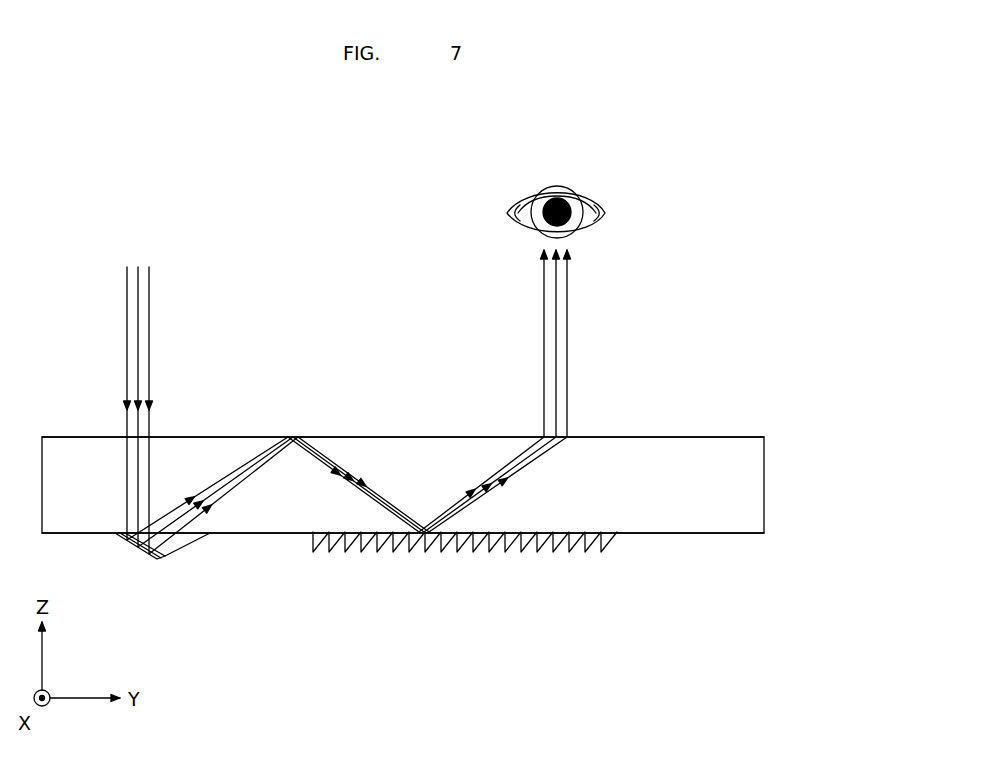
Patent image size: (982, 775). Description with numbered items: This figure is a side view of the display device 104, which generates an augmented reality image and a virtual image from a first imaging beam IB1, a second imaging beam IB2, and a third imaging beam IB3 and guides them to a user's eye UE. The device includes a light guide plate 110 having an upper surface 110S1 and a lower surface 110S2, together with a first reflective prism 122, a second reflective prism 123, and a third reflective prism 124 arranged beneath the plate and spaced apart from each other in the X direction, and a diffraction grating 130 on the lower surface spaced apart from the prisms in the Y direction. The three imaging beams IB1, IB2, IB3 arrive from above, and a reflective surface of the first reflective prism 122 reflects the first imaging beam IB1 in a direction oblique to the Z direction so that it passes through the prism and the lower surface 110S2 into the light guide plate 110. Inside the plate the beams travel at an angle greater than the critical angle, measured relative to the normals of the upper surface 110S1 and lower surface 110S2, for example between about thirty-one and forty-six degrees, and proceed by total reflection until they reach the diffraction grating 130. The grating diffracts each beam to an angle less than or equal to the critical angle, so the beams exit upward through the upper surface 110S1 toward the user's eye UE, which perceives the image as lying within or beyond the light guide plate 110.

The display device 104 is at (86, 177).
The light guide plate 110 is at (764, 485).
The upper surface of the light guide plate 110S1 is at (712, 437).
The lower surface of the light guide plate 110S2 is at (712, 533).
The first imaging beam IB1 is at (127, 318).
The second imaging beam IB2 is at (138, 350).
The third imaging beam IB3 is at (149, 382).
The first reflective prism 122 is at (152, 560).
The second reflective prism 123 is at (163, 562).
The third reflective prism 124 is at (190, 543).
The diffraction grating 130 is at (446, 562).
The user's eye UE is at (598, 185).